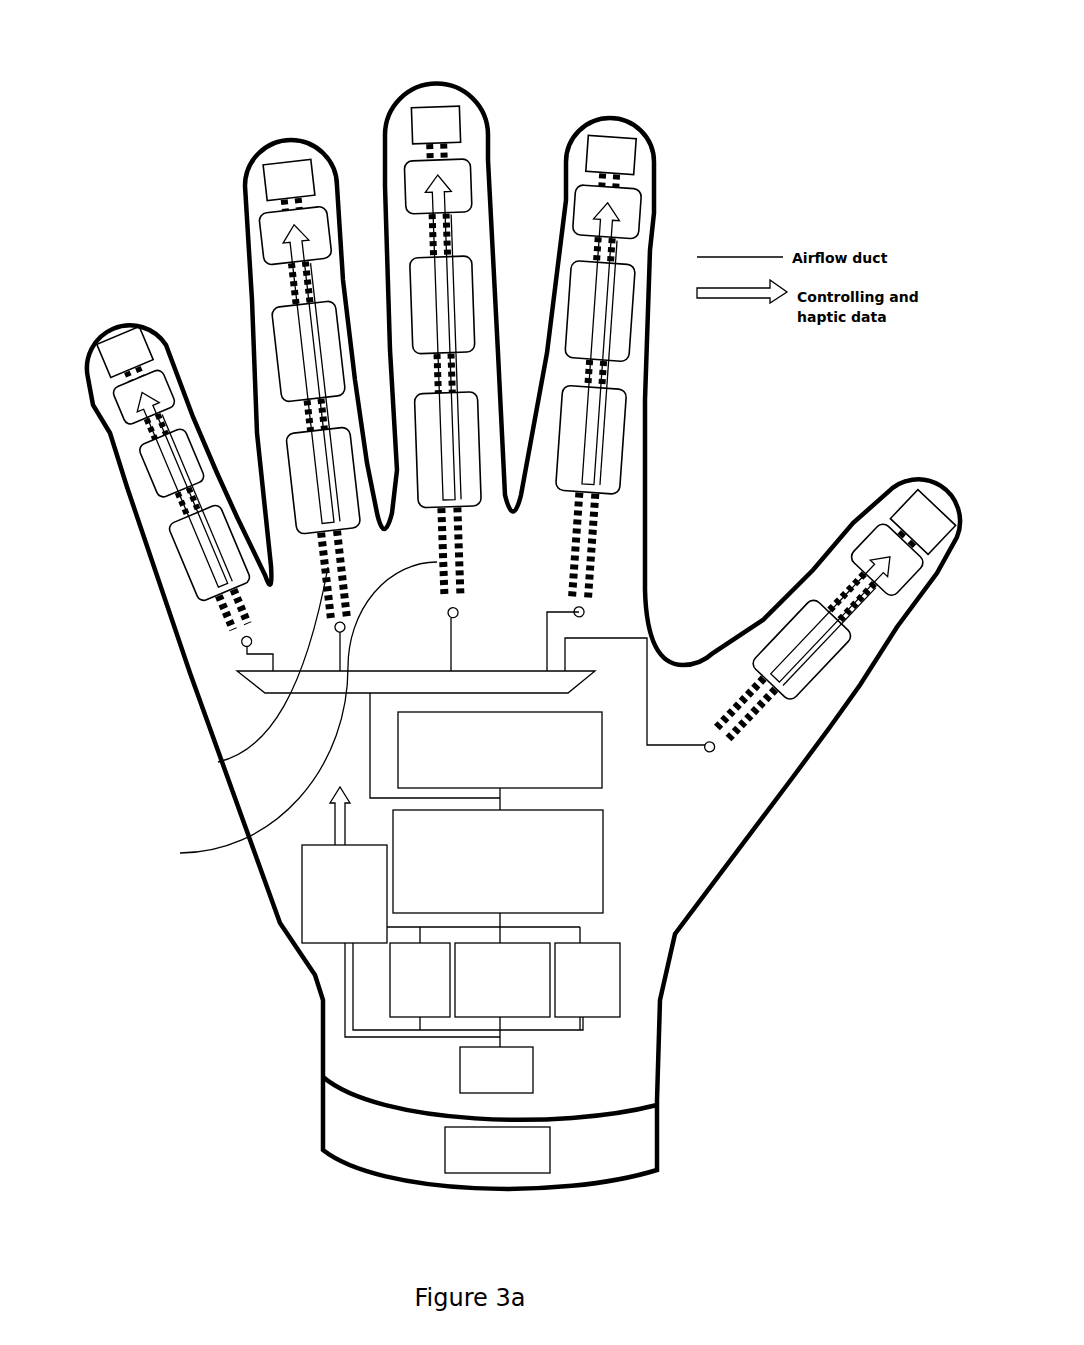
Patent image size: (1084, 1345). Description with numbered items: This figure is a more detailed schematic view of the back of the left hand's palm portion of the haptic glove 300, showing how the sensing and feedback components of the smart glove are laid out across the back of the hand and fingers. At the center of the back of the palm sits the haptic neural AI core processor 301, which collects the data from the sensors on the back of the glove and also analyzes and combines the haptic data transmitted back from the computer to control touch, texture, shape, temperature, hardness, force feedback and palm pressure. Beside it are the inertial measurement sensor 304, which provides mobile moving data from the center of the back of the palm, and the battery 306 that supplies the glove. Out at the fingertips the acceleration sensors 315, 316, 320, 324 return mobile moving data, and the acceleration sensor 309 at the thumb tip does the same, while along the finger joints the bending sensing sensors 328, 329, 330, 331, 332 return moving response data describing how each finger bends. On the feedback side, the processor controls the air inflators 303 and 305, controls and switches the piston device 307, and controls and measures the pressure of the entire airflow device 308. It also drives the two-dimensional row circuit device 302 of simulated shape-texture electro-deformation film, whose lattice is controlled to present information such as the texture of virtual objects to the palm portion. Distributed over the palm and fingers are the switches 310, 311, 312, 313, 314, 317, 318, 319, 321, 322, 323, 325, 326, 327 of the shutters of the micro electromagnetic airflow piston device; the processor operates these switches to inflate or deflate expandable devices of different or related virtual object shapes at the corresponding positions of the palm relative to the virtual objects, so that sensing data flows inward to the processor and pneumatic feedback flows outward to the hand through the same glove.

The haptic glove 300 is at (745, 845).
The haptic neural AI core processor 301 is at (575, 870).
The two-dimensional row circuit device 302 is at (580, 777).
The air inflator 303 is at (520, 1000).
The inertial measurement sensor 304 is at (590, 1017).
The air inflator 305 is at (395, 1015).
The battery 306 is at (523, 1148).
The piston device 307 is at (470, 1080).
The airflow device 308 is at (325, 926).
The acceleration sensor 309 is at (915, 505).
The switch 310 is at (872, 548).
The switch 311 is at (790, 640).
The switch 312 is at (620, 440).
The switch 313 is at (617, 310).
The switch 314 is at (623, 207).
The acceleration sensor 315 is at (600, 160).
The acceleration sensor 316 is at (433, 125).
The switch 317 is at (455, 180).
The switch 318 is at (455, 300).
The switch 319 is at (465, 428).
The acceleration sensor 320 is at (290, 180).
The switch 321 is at (312, 230).
The switch 322 is at (317, 338).
The switch 323 is at (379, 530).
The acceleration sensor 324 is at (128, 345).
The switch 325 is at (148, 385).
The switch 326 is at (188, 480).
The switch 327 is at (218, 545).
The bending sensing sensor 328 is at (227, 622).
The bending sensing sensor 329 is at (218, 762).
The bending sensing sensor 330 is at (180, 853).
The bending sensing sensor 331 is at (588, 548).
The bending sensing sensor 332 is at (767, 735).